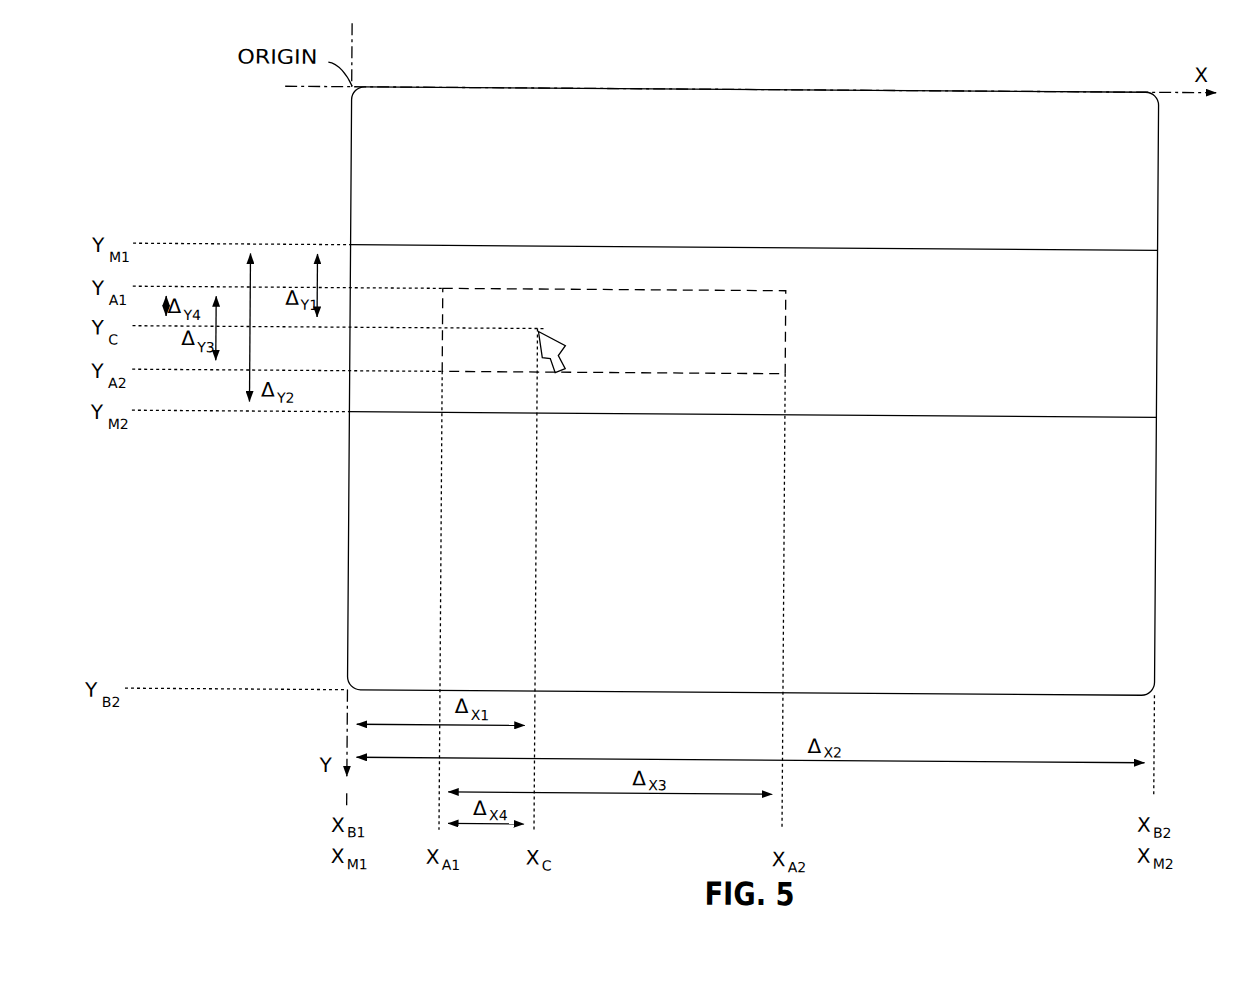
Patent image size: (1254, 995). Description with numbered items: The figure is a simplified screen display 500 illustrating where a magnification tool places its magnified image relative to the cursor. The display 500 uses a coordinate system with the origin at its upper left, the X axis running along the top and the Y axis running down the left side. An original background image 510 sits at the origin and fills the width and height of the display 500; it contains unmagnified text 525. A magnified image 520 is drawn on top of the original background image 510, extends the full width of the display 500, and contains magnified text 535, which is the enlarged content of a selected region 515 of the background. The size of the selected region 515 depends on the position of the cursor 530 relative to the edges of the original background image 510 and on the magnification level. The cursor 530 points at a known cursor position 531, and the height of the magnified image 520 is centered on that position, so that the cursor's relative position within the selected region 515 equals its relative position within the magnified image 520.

The display 500 is at (751, 90).
The original background image 510 is at (1140, 186).
The magnified image 520 is at (1141, 326).
The unmagnified text 525 is at (658, 501).
The selected region 515 is at (777, 375).
The cursor 530 is at (556, 364).
The cursor position 531 is at (532, 336).
The magnified text 535 is at (905, 298).